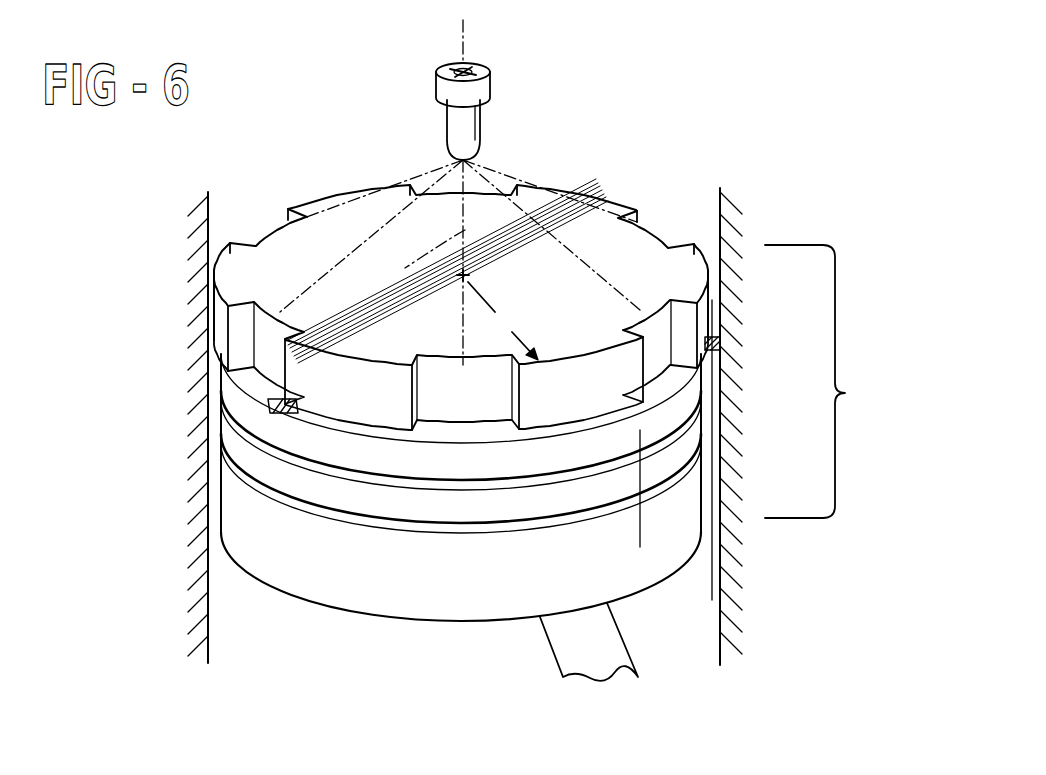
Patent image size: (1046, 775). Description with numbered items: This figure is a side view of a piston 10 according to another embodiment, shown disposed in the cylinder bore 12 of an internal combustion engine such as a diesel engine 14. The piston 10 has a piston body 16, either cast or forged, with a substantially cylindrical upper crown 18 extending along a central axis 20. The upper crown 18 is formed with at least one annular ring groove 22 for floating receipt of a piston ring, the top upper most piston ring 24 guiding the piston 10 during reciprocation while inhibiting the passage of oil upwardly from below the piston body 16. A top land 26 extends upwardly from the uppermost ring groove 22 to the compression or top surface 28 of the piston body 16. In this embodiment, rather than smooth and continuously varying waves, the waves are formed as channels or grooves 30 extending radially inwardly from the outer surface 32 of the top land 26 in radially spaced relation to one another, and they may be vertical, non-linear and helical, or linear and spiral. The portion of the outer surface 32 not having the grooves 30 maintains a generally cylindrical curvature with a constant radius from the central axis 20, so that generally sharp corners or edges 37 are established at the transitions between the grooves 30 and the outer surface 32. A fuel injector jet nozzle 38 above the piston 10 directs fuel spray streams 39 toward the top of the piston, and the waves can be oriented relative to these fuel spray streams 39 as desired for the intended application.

The piston 10 is at (683, 128).
The cylinder bore 12 is at (713, 600).
The diesel engine 14 is at (225, 179).
The piston body 16 is at (680, 535).
The upper crown 18 is at (824, 381).
The central axis 20 is at (466, 33).
The annular ring groove 22 is at (313, 413).
The top upper most piston ring 24 is at (720, 320).
The top land 26 is at (208, 290).
The top surface 28 is at (668, 265).
The grooves 30 is at (230, 268).
The outer surface 32 is at (707, 297).
The edges 37 is at (290, 210).
The fuel injector jet nozzle 38 is at (483, 127).
The fuel spray streams 39 is at (330, 228).